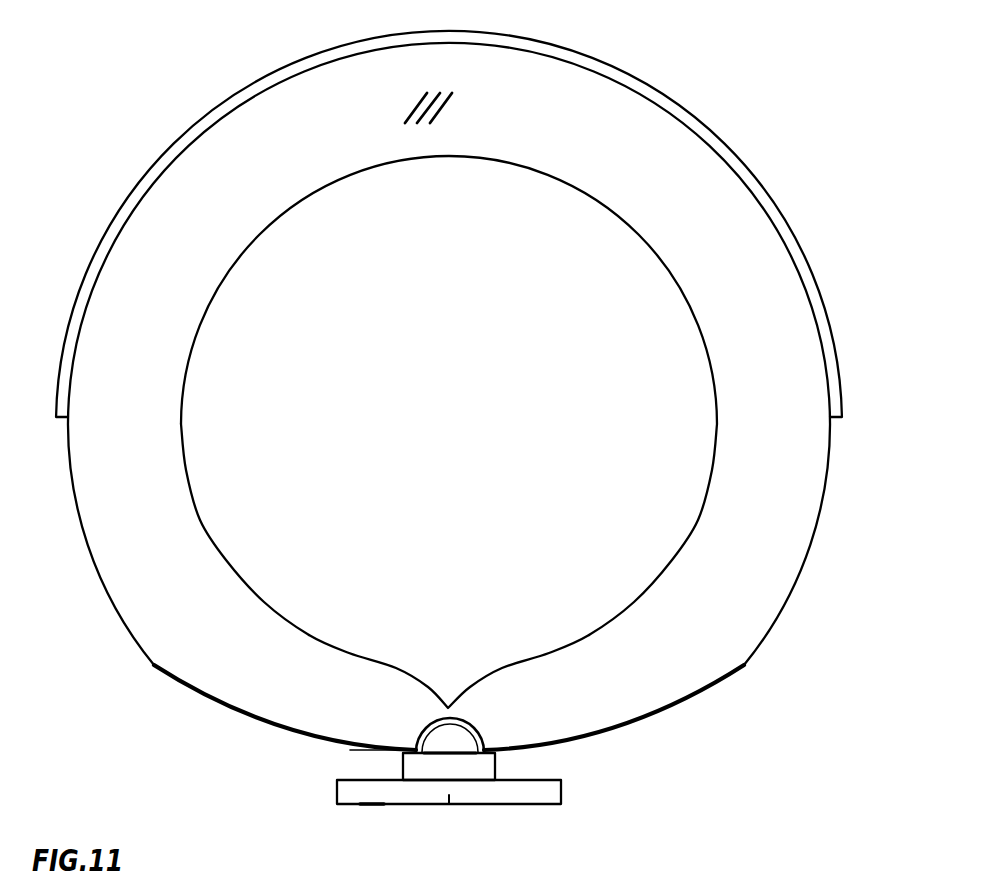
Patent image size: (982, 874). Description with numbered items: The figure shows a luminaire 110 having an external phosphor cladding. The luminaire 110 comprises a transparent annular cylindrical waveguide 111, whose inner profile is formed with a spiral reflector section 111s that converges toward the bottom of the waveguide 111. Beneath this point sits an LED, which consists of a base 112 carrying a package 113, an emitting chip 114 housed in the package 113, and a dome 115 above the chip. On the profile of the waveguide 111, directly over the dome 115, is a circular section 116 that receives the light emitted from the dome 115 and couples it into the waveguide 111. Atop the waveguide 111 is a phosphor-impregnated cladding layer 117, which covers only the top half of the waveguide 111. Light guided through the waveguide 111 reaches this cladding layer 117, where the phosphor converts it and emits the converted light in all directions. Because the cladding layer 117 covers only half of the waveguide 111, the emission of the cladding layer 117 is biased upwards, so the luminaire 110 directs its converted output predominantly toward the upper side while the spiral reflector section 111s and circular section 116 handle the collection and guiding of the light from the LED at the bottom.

The luminaire 110 is at (750, 775).
The transparent annular cylindrical waveguide 111 is at (449, 396).
The spiral reflector section 111s is at (468, 695).
The base 112 is at (533, 795).
The package 113 is at (466, 765).
The emitting chip 114 is at (447, 757).
The dome 115 is at (413, 750).
The circular section 116 is at (417, 732).
The phosphor-impregnated cladding layer 117 is at (142, 178).